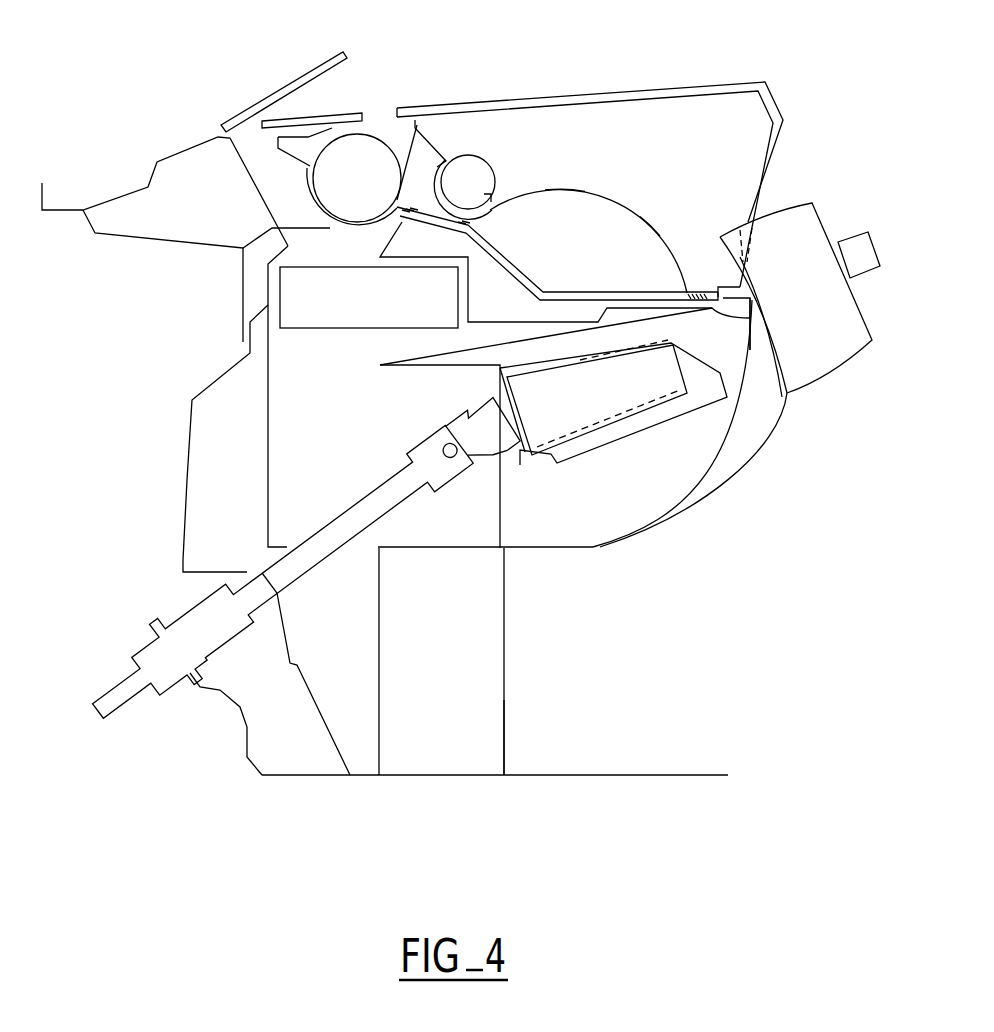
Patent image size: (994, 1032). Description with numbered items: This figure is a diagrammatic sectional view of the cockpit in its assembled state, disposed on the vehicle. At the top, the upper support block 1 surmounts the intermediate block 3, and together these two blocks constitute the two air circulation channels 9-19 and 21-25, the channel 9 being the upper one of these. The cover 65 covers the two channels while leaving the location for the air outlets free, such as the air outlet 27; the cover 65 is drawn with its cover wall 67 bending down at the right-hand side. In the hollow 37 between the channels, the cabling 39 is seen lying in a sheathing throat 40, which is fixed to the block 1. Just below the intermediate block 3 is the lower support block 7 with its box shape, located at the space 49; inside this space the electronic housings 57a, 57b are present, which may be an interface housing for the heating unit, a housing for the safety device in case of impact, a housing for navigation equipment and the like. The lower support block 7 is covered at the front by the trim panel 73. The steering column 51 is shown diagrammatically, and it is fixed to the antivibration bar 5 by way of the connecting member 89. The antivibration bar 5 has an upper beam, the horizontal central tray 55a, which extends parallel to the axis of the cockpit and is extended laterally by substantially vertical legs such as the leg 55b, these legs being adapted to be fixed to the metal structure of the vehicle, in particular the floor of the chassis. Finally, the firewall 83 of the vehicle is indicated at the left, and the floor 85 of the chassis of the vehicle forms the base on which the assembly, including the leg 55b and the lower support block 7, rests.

The upper support block 1 is at (597, 183).
The intermediate block 3 is at (303, 195).
The antivibration bar 5 is at (485, 662).
The lower support block 7 is at (482, 327).
The air circulation channel 9 is at (657, 225).
The air circulation channel 9-19 is at (588, 241).
The air circulation channel 21-25 is at (339, 176).
The air outlet 27 is at (380, 127).
The hollow 37 is at (497, 200).
The cabling 39 is at (480, 165).
The sheathing throat 40 is at (443, 133).
The space 49 is at (546, 412).
The steering column 51 is at (322, 570).
The upper beam 55a is at (405, 363).
The vertical leg 55b is at (485, 735).
The electronic housing 57a is at (645, 420).
The electronic housing 57b is at (300, 292).
The cover 65 is at (786, 102).
The cover wall 67 is at (765, 177).
The trim panel 73 is at (738, 480).
The firewall 83 is at (240, 337).
The floor 85 is at (423, 777).
The connecting member 89 is at (655, 370).